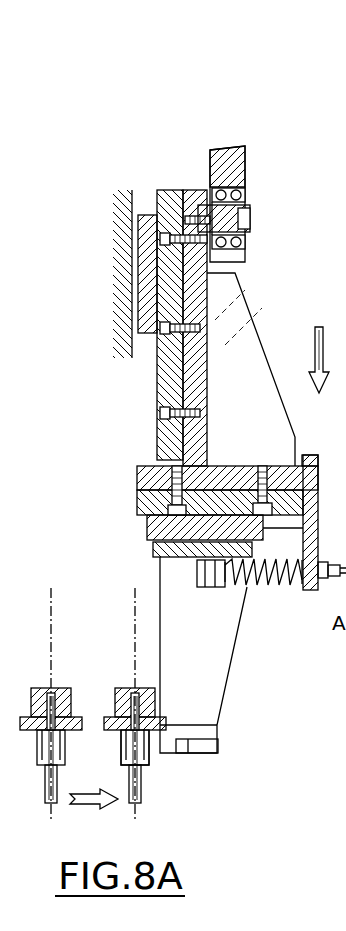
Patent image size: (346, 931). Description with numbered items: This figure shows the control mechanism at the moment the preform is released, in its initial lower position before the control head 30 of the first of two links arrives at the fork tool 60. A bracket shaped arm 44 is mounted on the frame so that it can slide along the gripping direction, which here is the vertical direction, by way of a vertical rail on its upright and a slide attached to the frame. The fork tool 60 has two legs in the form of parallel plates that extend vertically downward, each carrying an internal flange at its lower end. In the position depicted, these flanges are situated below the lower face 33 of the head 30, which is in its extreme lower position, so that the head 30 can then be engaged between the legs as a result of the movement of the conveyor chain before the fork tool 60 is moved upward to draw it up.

The bracket shaped arm 44 is at (270, 338).
The fork tool 60 is at (247, 622).
The control head 30 is at (123, 688).
The lower face 33 is at (120, 736).
The nozzle position n An is at (135, 602).